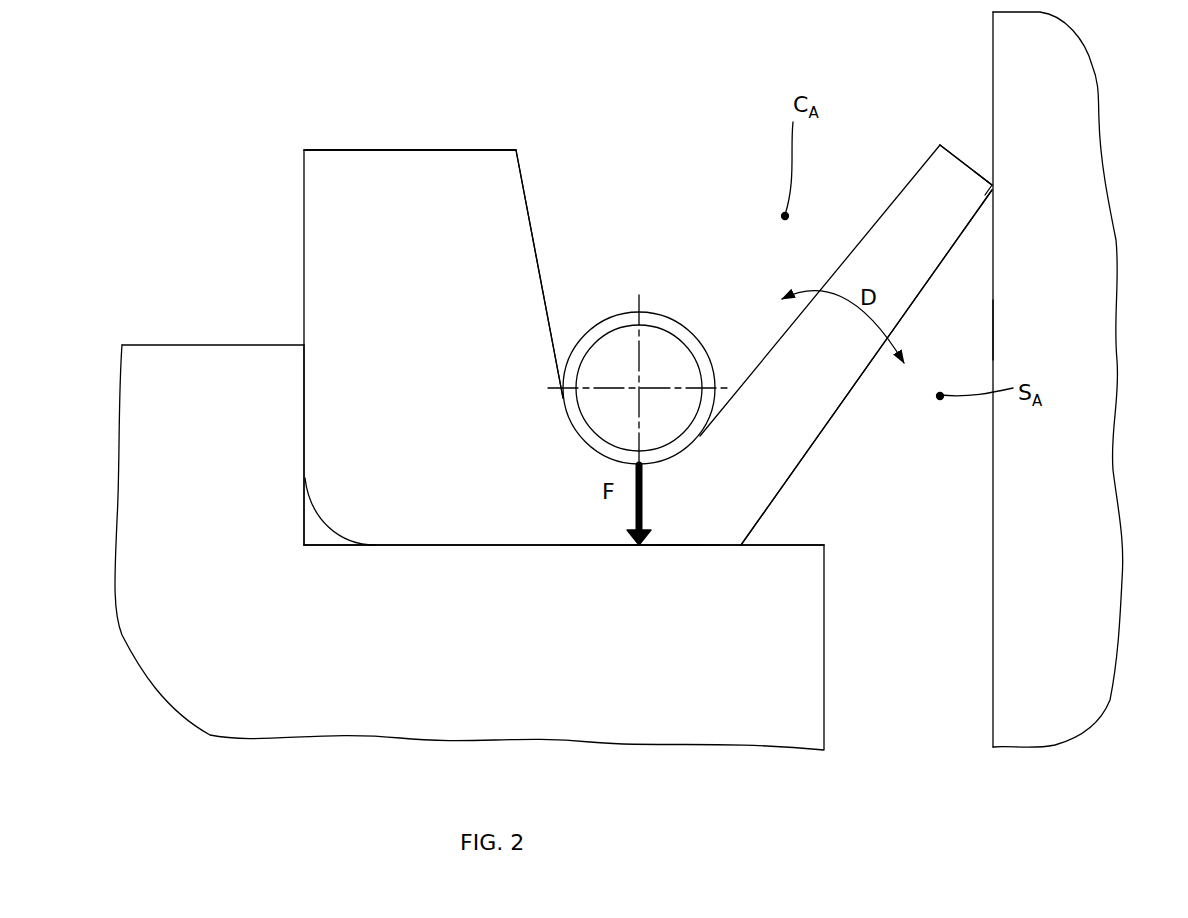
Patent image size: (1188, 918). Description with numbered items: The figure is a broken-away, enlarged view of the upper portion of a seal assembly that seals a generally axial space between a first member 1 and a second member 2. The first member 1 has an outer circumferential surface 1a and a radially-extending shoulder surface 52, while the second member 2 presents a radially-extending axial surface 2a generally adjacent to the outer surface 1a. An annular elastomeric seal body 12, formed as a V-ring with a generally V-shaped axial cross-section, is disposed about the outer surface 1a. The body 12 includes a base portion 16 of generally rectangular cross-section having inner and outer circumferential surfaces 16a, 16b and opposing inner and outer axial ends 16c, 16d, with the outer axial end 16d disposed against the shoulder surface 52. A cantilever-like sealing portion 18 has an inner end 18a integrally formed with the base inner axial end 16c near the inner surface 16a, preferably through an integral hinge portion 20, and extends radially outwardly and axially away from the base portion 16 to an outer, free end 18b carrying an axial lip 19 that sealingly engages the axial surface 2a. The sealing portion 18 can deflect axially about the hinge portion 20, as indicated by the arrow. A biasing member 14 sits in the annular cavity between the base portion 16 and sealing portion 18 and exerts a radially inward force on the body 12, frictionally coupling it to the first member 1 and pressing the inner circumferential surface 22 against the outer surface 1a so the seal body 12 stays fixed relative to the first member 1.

The first member 1 is at (140, 442).
The outer circumferential surface 1a is at (548, 544).
The second member 2 is at (1082, 190).
The radially-extending axial surface 2a is at (992, 345).
The annular elastomeric seal body 12 is at (258, 240).
The biasing member 14 is at (665, 312).
The base portion 16 is at (302, 302).
The inner circumferential surface of base portion 16a is at (428, 547).
The outer circumferential surface of base portion 16b is at (410, 150).
The inner axial end of base portion 16c is at (540, 253).
The outer axial end of base portion 16d is at (304, 395).
The sealing portion 18 is at (852, 394).
The inner end of sealing portion 18a is at (733, 494).
The outer free end of sealing portion 18b is at (972, 201).
The axial lip 19 is at (985, 190).
The hinge portion 20 is at (678, 520).
The inner circumferential surface of seal body 22 is at (610, 544).
The shoulder surface 52 is at (304, 456).